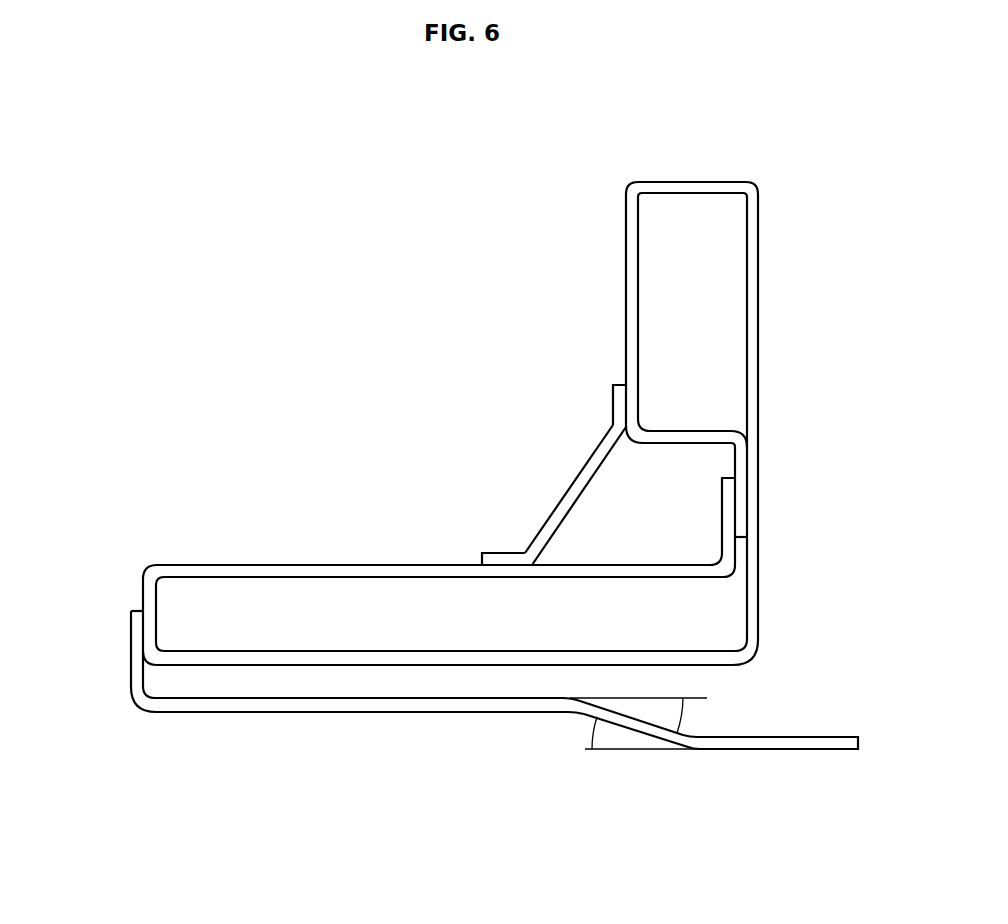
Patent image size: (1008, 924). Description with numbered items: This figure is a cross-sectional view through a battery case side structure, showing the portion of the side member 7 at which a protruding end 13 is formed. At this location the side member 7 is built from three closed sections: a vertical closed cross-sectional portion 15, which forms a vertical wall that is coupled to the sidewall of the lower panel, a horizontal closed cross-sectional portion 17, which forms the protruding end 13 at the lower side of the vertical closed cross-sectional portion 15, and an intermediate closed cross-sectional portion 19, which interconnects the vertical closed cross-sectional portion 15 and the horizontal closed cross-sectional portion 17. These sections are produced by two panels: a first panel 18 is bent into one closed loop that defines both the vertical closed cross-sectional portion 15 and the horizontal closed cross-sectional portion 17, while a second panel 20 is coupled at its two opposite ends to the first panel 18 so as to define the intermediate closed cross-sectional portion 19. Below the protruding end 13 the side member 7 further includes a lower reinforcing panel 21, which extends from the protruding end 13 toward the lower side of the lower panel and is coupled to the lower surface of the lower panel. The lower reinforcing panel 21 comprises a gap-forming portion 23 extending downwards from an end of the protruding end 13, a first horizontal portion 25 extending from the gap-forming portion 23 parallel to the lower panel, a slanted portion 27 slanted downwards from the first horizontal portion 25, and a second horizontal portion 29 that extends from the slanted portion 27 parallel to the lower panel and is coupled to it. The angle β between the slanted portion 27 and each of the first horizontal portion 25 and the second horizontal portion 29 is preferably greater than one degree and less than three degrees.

The side member 7 is at (352, 455).
The protruding end 13 is at (167, 568).
The vertical closed cross-sectional portion 15 is at (693, 272).
The horizontal closed cross-sectional portion 17 is at (297, 605).
The first panel 18 is at (752, 387).
The intermediate closed cross-sectional portion 19 is at (633, 502).
The second panel 20 is at (555, 517).
The lower reinforcing panel 21 is at (768, 860).
The gap-forming portion 23 is at (115, 611).
The first horizontal portion 25 is at (557, 738).
The slanted portion 27 is at (673, 760).
The second horizontal portion 29 is at (857, 768).